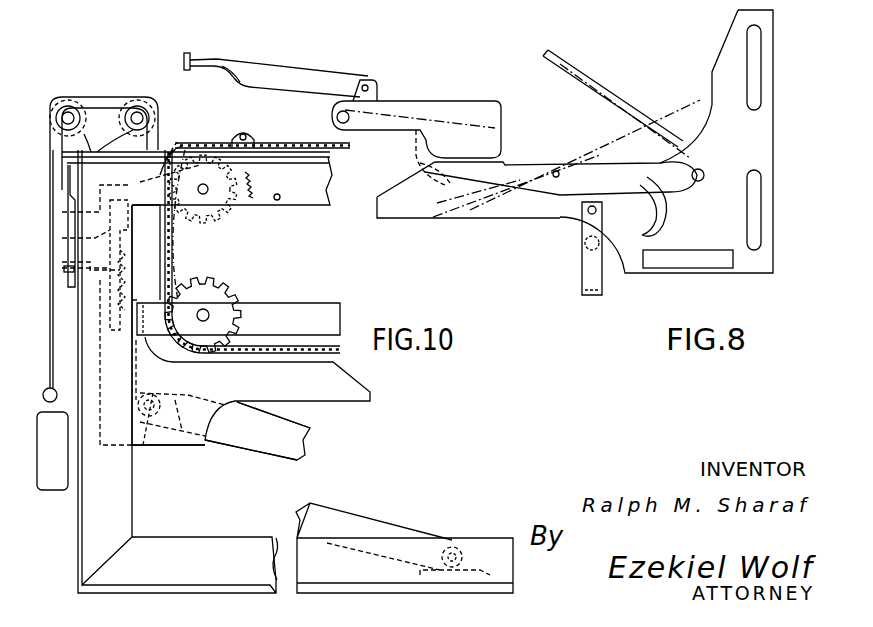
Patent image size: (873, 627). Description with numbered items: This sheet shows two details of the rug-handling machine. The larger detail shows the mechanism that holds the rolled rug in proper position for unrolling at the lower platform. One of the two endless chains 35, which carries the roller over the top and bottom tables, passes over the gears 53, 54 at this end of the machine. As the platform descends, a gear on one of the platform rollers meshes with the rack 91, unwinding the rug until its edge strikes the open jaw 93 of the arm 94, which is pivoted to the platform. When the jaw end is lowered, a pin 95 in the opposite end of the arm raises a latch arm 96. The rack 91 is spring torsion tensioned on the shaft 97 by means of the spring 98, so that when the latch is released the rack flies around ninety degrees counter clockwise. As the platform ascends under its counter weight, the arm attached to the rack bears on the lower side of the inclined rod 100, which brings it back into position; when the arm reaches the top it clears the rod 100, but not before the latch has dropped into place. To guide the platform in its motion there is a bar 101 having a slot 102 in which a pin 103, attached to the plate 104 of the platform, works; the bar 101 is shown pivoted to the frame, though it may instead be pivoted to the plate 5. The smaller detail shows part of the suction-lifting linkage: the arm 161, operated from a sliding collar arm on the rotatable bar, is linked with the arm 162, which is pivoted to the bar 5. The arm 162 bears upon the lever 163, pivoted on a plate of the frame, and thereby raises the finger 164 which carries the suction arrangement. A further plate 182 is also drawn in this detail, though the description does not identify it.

In FIG. 10, the plate 5 is at (324, 312).
In FIG. 10, the endless chain 35 is at (172, 256).
In FIG. 10, the gear 53 is at (235, 290).
In FIG. 10, the gear 54 is at (230, 216).
In FIG. 10, the rack 91 is at (137, 265).
In FIG. 10, the open jaw 93 is at (190, 148).
In FIG. 10, the arm 94 is at (176, 148).
In FIG. 10, the pin 95 is at (62, 212).
In FIG. 10, the latch arm 96 is at (104, 124).
In FIG. 10, the shaft 97 is at (62, 238).
In FIG. 10, the spring 98 is at (62, 304).
In FIG. 10, the inclined rod 100 is at (62, 262).
In FIG. 10, the bar 101 is at (325, 463).
In FIG. 10, the slot 102 is at (194, 394).
In FIG. 10, the pin 103 is at (142, 448).
In FIG. 10, the plate 104 is at (157, 404).
In FIG. 8, the arm 161 is at (272, 62).
In FIG. 8, the arm 162 is at (405, 100).
In FIG. 8, the lever 163 is at (482, 218).
In FIG. 8, the finger 164 is at (598, 82).
In FIG. 8, the plate 182 is at (748, 280).